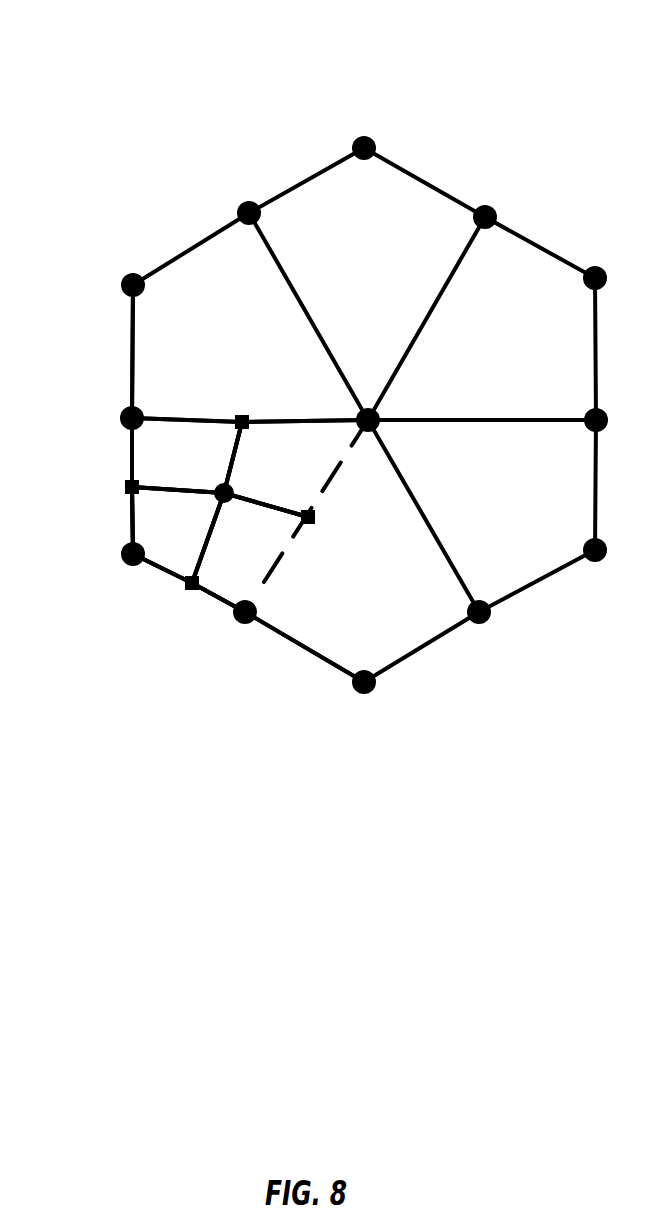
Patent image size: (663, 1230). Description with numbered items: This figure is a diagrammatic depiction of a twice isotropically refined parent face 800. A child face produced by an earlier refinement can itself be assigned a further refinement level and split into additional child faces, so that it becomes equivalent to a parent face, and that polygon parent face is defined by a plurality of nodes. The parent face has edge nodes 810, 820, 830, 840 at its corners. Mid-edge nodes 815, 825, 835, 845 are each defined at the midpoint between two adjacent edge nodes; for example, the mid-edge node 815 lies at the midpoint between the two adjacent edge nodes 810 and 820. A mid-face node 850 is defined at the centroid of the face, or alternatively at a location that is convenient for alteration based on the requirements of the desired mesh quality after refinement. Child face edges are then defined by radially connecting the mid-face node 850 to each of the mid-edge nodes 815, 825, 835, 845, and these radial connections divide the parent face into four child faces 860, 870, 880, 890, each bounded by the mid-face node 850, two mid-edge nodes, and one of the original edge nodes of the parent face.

The twice isotropically refined parent face 800 is at (456, 90).
The edge node 810 is at (121, 555).
The mid-edge node 815 is at (192, 596).
The edge node 820 is at (247, 625).
The mid-edge node 825 is at (322, 517).
The edge node 830 is at (369, 408).
The mid-edge node 835 is at (245, 412).
The edge node 840 is at (122, 420).
The mid-edge node 845 is at (122, 487).
The mid-face node 850 is at (236, 493).
The child face 860 is at (272, 563).
The child face 870 is at (309, 462).
The child face 880 is at (203, 470).
The child face 890 is at (198, 541).